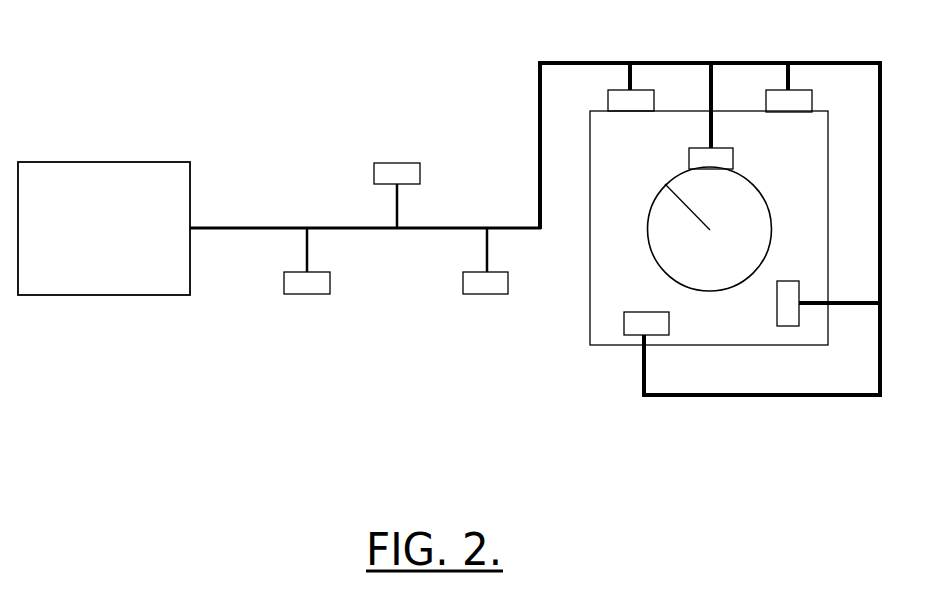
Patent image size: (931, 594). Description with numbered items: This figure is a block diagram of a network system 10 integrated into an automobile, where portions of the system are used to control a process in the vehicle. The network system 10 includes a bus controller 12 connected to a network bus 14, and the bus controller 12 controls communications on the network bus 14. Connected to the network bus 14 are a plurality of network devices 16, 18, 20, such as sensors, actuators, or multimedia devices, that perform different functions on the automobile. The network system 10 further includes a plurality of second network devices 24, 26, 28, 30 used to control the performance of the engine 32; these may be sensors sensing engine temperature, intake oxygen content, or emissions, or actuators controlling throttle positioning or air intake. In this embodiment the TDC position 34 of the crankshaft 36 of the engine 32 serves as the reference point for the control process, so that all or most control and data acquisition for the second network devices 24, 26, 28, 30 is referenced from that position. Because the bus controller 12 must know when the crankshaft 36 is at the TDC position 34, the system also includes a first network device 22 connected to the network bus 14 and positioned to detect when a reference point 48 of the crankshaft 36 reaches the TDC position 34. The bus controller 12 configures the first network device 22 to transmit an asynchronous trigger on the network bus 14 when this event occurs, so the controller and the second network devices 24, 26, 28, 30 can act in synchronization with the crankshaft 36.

The network system 10 is at (298, 125).
The bus controller 12 is at (190, 200).
The network bus 14 is at (520, 227).
The network device 16 is at (395, 163).
The network device 18 is at (309, 294).
The network device 20 is at (485, 294).
The first network device 22 is at (735, 155).
The second network device 24 is at (620, 90).
The second network device 26 is at (778, 90).
The second network device 28 is at (790, 282).
The second network device 30 is at (668, 328).
The engine 32 is at (613, 252).
The TDC position 34 is at (713, 173).
The crankshaft 36 is at (680, 235).
The reference point 48 is at (665, 184).